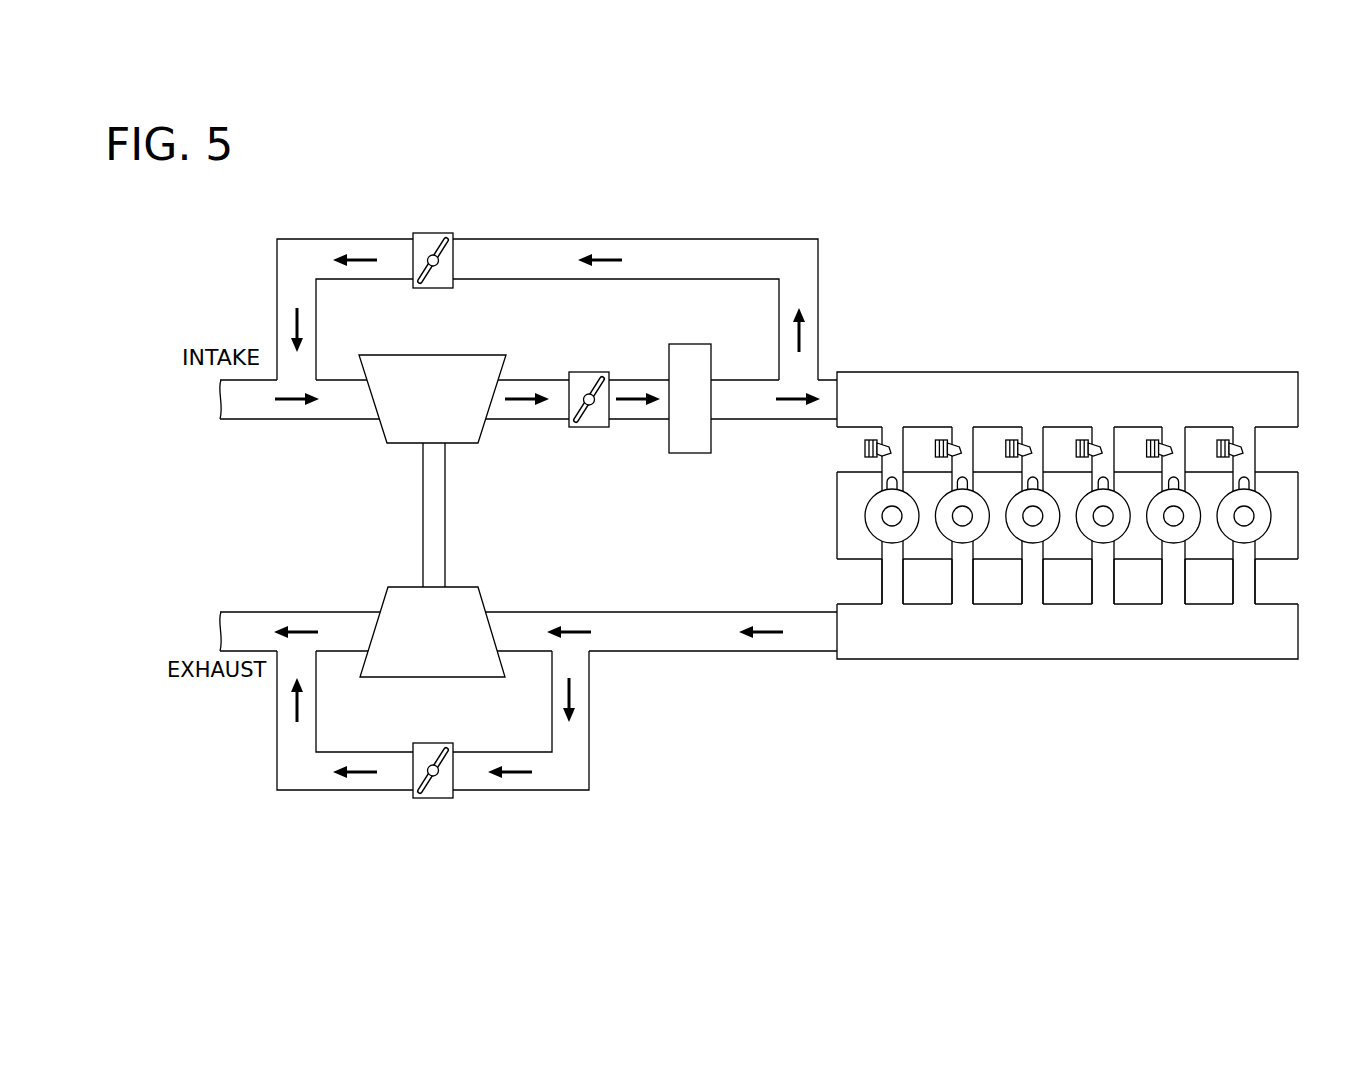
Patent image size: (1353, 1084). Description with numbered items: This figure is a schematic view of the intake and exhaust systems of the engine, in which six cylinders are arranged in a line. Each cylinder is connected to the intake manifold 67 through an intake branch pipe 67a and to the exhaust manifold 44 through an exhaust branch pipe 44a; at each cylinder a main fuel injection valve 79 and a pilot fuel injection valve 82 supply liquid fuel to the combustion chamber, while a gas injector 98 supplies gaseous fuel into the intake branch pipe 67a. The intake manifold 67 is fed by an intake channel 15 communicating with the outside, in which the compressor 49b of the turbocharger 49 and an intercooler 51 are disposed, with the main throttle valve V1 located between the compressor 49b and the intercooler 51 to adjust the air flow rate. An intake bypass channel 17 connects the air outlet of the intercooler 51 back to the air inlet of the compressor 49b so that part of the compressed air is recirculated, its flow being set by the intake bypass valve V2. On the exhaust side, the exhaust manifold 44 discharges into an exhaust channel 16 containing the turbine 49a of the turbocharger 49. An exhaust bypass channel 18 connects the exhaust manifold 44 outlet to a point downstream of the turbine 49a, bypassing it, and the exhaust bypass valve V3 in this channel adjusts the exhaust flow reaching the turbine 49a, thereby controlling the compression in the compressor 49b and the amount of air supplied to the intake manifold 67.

The intake channel 15 is at (735, 428).
The exhaust channel 16 is at (711, 659).
The intake bypass channel 17 is at (712, 246).
The exhaust bypass channel 18 is at (580, 768).
The exhaust manifold 44 is at (1062, 650).
The exhaust branch pipe 44a is at (893, 585).
The turbocharger 49 is at (364, 516).
The turbine 49a is at (398, 597).
The compressor 49b is at (398, 442).
The intercooler 51 is at (690, 454).
The intake manifold 67 is at (1062, 381).
The intake branch pipe 67a is at (920, 437).
The main fuel injection valve 79 is at (890, 516).
The pilot fuel injection valve 82 is at (882, 497).
The gas injector 98 is at (866, 449).
The main throttle valve V1 is at (588, 428).
The intake bypass valve V2 is at (433, 236).
The exhaust bypass valve V3 is at (433, 800).